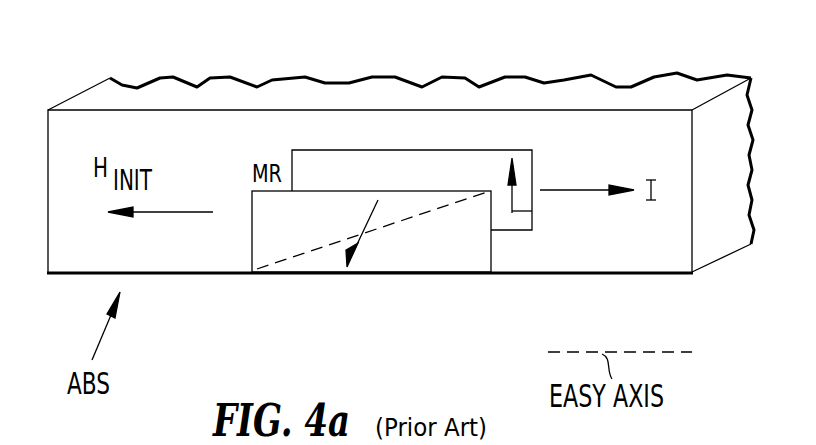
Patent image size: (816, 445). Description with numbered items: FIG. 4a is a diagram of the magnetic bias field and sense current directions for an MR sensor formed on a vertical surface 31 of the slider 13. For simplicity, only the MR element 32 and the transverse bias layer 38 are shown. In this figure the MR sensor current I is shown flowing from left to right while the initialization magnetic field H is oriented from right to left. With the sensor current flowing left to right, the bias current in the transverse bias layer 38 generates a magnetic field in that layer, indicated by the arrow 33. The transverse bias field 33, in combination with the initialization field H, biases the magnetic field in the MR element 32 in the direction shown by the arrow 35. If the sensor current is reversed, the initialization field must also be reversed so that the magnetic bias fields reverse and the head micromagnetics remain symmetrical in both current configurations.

The slider 13 is at (616, 87).
The vertical surface 31 is at (609, 264).
The MR element 32 is at (250, 236).
The transverse bias field 33 is at (532, 211).
The magnetic bias direction 35 is at (358, 231).
The transverse bias layer 38 is at (532, 162).